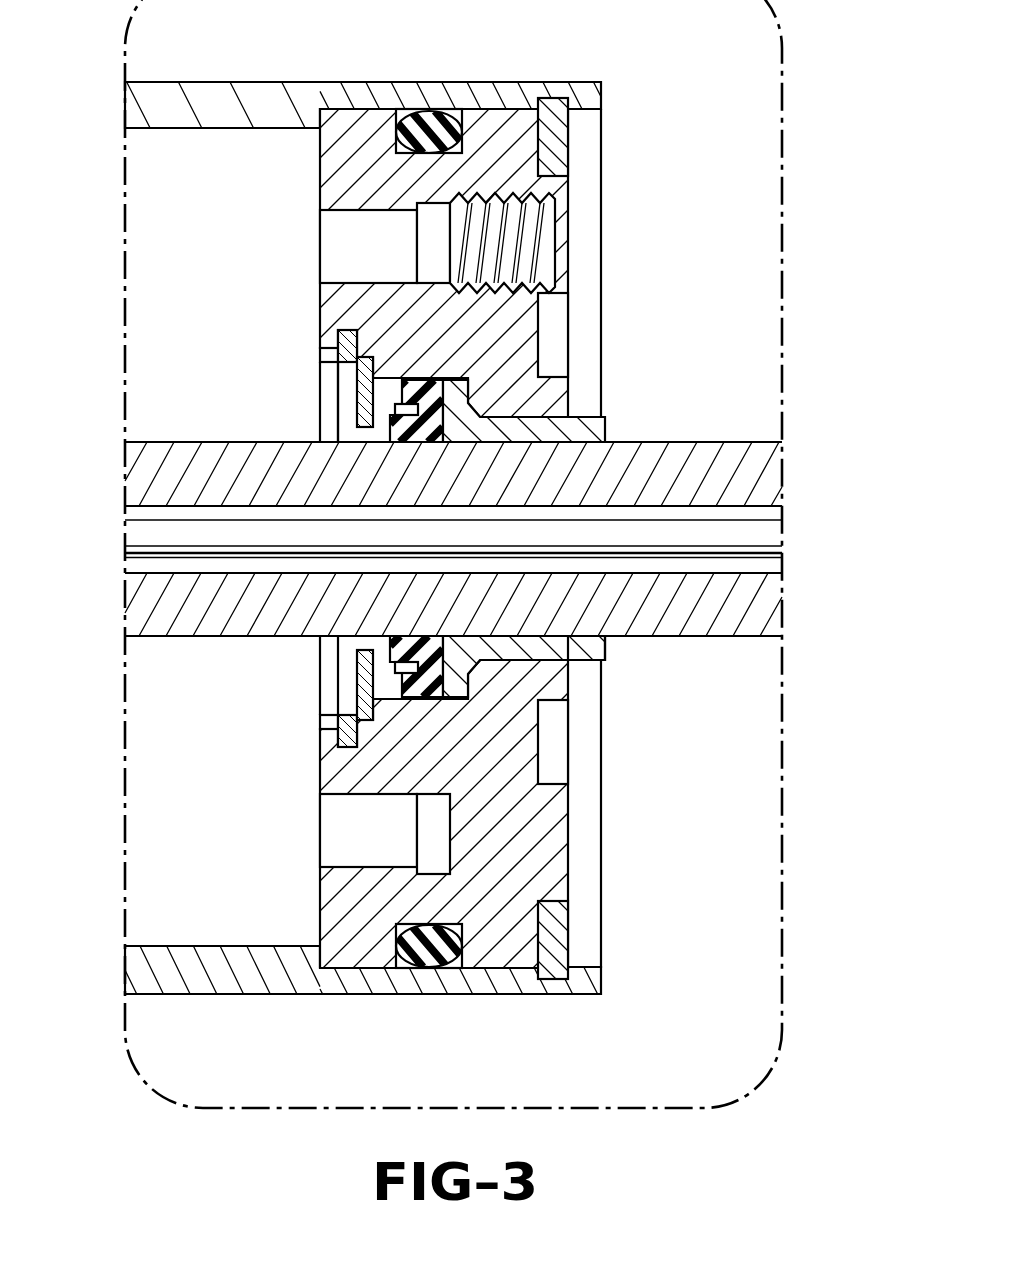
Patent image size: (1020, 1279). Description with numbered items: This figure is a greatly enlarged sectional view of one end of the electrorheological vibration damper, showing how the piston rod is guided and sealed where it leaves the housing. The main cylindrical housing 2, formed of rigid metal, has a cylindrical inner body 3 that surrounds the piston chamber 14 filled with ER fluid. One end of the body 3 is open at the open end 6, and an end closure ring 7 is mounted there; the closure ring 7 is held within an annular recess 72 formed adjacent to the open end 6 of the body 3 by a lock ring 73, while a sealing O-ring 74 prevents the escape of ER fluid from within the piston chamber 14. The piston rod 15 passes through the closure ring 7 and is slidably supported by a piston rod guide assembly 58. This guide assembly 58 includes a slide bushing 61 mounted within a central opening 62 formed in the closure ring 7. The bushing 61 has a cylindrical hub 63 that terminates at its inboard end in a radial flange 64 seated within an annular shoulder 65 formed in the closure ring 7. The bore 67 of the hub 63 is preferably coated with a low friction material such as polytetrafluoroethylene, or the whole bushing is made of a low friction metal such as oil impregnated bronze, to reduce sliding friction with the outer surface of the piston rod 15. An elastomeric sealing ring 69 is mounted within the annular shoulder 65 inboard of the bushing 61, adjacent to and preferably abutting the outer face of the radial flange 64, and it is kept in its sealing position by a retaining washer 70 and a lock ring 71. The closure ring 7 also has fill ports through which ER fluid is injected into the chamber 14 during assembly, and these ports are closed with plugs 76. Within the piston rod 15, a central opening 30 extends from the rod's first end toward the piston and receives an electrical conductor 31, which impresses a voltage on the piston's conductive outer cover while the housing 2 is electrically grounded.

The main cylindrical housing 2 is at (487, 76).
The cylindrical inner body 3 is at (244, 990).
The open end 6 is at (585, 966).
The end closure ring 7 is at (545, 330).
The piston chamber 14 is at (183, 872).
The piston rod 15 is at (785, 619).
The central opening 30 is at (760, 565).
The electrical conductor 31 is at (772, 538).
The piston rod guide assembly 58 is at (320, 411).
The slide bushing 61 is at (564, 410).
The central opening 62 is at (532, 661).
The cylindrical hub 63 is at (592, 650).
The radial flange 64 is at (453, 693).
The annular shoulder 65 is at (393, 700).
The bore 67 is at (570, 637).
The elastomeric sealing ring 69 is at (409, 370).
The retaining washer 70 is at (362, 383).
The lock ring 71 is at (348, 340).
The annular recess 72 is at (358, 107).
The lock ring 73 is at (560, 153).
The sealing O-ring 74 is at (417, 958).
The plug 76 is at (535, 240).